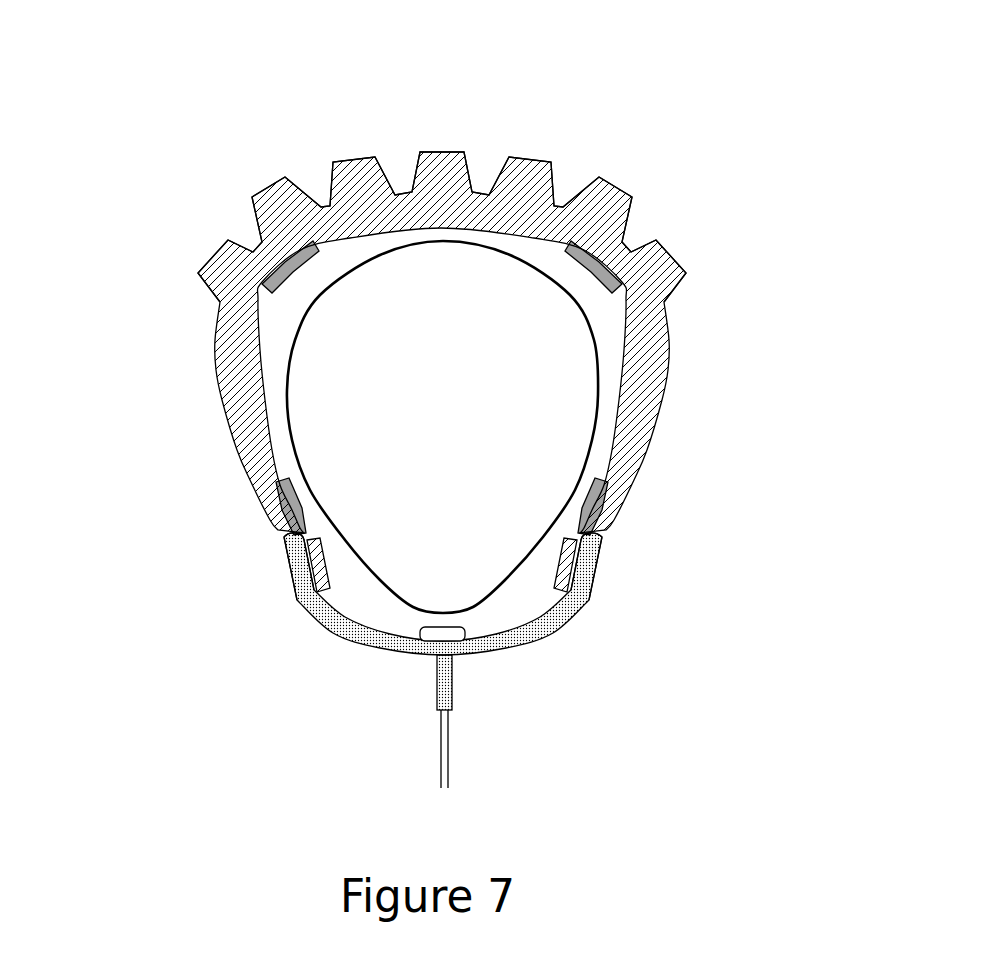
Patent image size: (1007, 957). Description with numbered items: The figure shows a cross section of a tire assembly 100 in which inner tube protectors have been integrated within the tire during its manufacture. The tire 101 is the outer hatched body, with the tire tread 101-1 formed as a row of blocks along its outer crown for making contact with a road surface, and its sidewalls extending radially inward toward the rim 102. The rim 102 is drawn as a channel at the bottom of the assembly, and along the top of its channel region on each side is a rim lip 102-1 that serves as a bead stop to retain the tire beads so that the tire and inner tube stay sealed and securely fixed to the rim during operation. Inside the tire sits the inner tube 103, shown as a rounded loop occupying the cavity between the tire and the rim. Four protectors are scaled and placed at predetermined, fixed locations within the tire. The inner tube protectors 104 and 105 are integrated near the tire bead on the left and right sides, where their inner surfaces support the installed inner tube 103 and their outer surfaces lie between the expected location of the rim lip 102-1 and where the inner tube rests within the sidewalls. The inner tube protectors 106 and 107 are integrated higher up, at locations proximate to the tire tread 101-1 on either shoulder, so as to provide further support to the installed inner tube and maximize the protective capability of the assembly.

The tire assembly 100 is at (453, 425).
The tire 101 is at (672, 375).
The tire tread 101-1 is at (625, 182).
The rim 102 is at (532, 660).
The rim lip 102-1 is at (603, 558).
The inner tube 103 is at (312, 327).
The inner tube protector 104 is at (283, 523).
The inner tube protector 105 is at (580, 512).
The inner tube protector 106 is at (270, 251).
The inner tube protector 107 is at (421, 173).